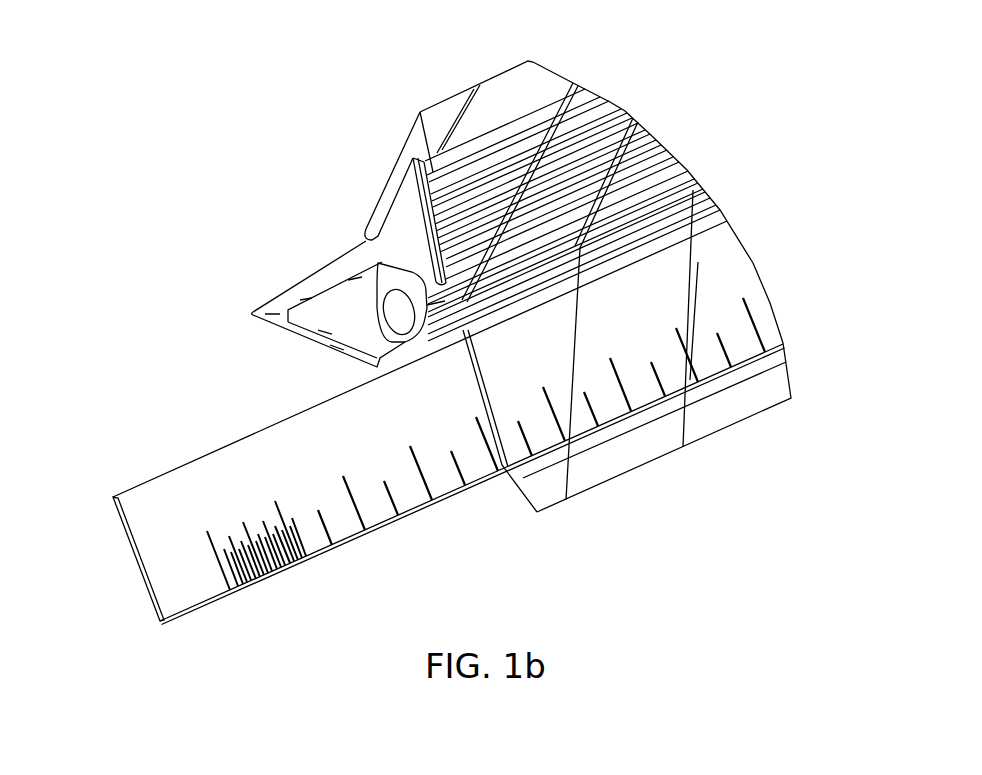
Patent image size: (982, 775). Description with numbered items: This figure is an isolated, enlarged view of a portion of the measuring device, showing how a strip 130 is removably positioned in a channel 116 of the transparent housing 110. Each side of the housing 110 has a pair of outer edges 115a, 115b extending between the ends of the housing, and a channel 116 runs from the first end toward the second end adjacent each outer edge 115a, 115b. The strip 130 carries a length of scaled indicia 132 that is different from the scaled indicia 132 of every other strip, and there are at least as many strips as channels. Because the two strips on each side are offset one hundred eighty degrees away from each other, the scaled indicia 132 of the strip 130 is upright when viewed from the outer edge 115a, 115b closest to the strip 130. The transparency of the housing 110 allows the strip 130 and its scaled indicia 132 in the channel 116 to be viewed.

The housing 110 is at (462, 80).
The outer edge 115a is at (628, 452).
The outer edge 115b is at (538, 78).
The channel 116 is at (417, 173).
The strip 130 is at (153, 468).
The scaled indicia 132 is at (199, 572).